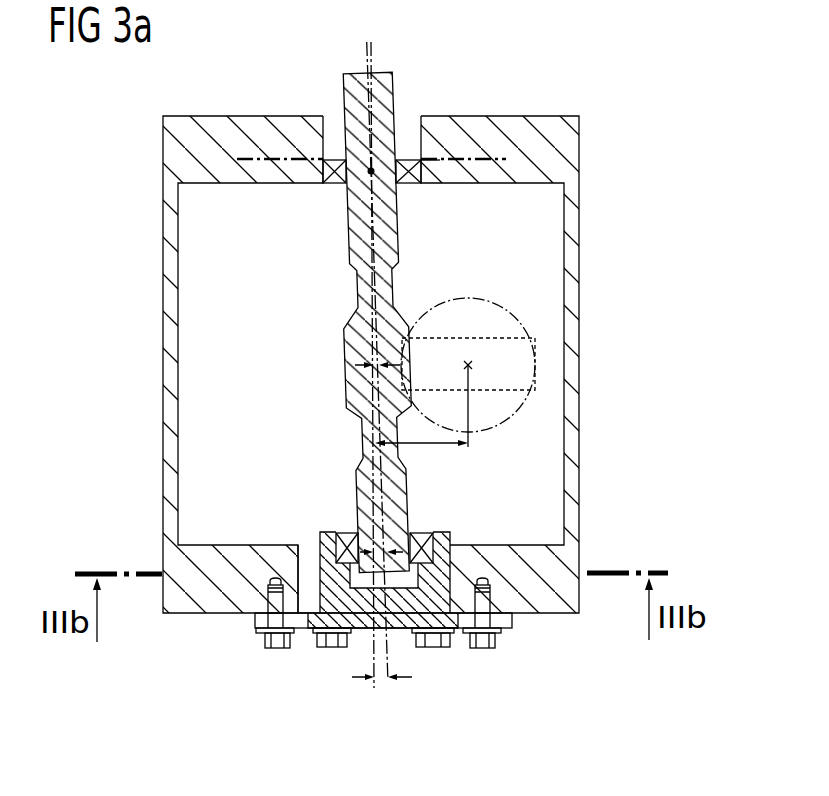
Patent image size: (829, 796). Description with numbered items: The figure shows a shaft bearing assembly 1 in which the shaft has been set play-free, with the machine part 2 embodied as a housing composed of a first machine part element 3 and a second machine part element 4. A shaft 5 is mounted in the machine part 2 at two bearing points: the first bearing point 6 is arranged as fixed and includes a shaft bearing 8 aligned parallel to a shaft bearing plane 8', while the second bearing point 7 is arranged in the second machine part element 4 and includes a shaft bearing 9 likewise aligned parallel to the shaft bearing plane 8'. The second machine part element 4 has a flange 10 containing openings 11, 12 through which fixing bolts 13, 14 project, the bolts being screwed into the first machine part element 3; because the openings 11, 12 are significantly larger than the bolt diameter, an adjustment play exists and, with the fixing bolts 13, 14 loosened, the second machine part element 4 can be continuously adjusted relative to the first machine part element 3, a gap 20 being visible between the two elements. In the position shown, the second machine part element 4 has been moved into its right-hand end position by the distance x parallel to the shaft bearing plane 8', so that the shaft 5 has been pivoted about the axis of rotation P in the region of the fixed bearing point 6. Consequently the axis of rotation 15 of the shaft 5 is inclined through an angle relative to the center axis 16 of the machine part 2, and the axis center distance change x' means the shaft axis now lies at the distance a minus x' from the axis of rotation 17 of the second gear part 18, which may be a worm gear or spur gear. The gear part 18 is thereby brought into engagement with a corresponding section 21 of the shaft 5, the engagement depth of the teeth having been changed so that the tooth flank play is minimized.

The shaft bearing assembly 1 is at (640, 107).
The machine part 2 is at (183, 655).
The first machine part element 3 is at (173, 398).
The second machine part element 4 is at (441, 532).
The shaft 5 is at (360, 72).
The first bearing point 6 is at (336, 148).
The second bearing point 7 is at (340, 527).
The shaft bearing 8 is at (408, 124).
The shaft bearing plane 8' is at (442, 112).
The shaft bearing 9 is at (418, 530).
The flange 10 is at (512, 618).
The opening 11 is at (498, 640).
The opening 12 is at (290, 649).
The fixing bolt 13 is at (484, 650).
The fixing bolt 14 is at (275, 649).
The axis of rotation 15 is at (390, 457).
The center axis 16 is at (362, 418).
The axis of rotation 17 is at (471, 364).
The second gear part 18 is at (528, 400).
The gap 20 is at (308, 560).
The corresponding section 21 is at (400, 353).
The axis of rotation P is at (364, 173).
The distance a is at (421, 427).
The distance x is at (370, 506).
The axis center distance change x' is at (354, 377).